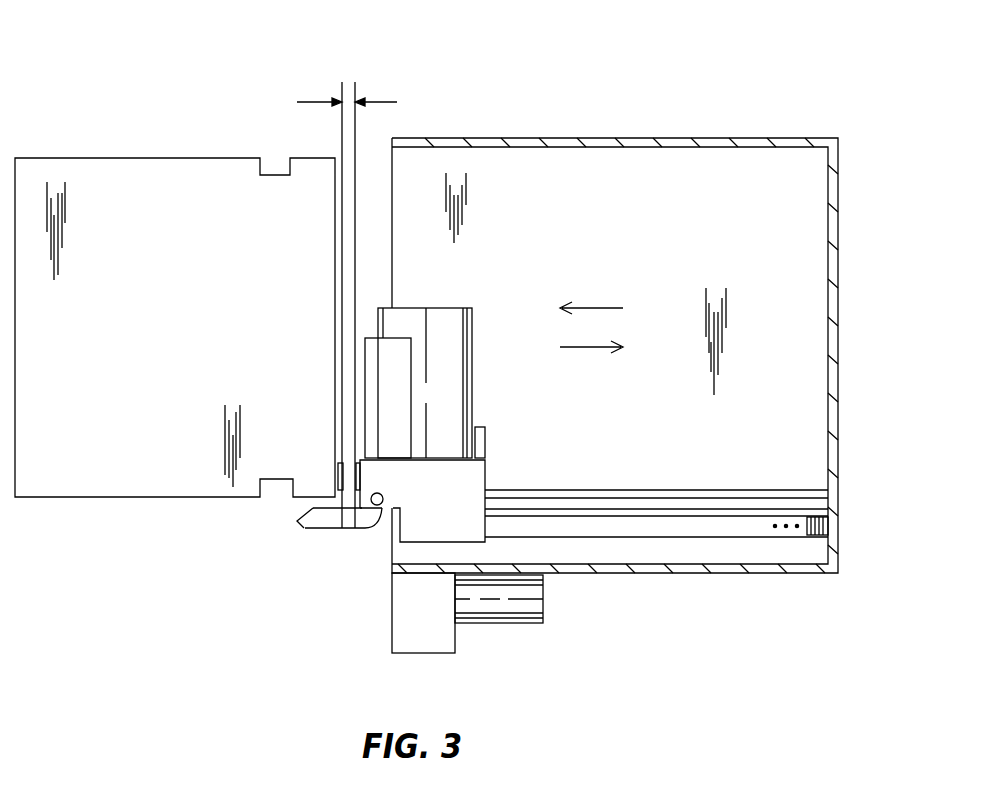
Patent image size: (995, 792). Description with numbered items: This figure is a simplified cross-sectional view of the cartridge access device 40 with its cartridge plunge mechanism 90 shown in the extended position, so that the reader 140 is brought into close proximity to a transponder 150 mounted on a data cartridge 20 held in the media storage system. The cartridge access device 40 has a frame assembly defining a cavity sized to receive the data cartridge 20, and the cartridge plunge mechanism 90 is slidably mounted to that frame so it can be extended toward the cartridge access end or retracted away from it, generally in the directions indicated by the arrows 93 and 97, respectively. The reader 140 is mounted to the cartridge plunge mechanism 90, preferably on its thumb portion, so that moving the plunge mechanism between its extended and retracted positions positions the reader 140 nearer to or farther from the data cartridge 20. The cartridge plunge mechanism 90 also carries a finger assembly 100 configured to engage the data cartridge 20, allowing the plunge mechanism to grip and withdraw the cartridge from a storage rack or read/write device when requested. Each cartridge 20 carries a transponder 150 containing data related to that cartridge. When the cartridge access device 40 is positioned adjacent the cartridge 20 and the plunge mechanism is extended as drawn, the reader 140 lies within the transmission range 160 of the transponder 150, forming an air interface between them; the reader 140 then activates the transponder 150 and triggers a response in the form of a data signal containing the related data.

The data cartridge 20 is at (171, 154).
The cartridge access device 40 is at (848, 189).
The cartridge plunge mechanism 90 is at (433, 304).
The arrow 93 is at (606, 308).
The arrow 97 is at (574, 347).
The finger assembly 100 is at (300, 521).
The reader 140 is at (355, 528).
The transponder 150 is at (342, 528).
The transmission range 160 is at (348, 78).